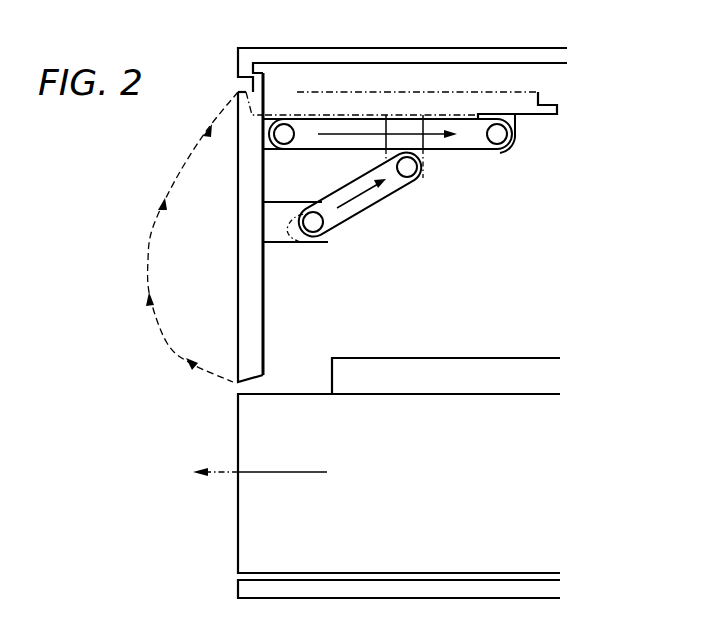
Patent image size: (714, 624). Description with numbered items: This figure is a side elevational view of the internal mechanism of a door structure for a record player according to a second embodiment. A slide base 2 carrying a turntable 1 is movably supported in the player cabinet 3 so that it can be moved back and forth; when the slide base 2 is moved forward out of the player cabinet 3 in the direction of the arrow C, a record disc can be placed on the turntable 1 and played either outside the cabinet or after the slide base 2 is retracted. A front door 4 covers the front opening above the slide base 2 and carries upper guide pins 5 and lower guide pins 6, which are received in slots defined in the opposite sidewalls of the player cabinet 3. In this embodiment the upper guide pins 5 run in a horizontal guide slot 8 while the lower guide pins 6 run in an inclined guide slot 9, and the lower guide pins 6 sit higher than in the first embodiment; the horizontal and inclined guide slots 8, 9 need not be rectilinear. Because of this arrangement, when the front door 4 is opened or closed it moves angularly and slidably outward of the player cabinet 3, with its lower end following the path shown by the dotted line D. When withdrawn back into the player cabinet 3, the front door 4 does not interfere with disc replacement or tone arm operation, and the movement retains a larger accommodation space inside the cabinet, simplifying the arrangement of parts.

The turntable 1 is at (395, 368).
The slide base 2 is at (445, 407).
The player cabinet 3 is at (338, 56).
The front door 4 is at (445, 92).
The upper guide pins 5 is at (274, 137).
The lower guide pins 6 is at (317, 226).
The horizontal guide slot 8 is at (367, 127).
The inclined guide slot 9 is at (368, 198).
The arrow C is at (275, 472).
The dotted line D is at (153, 225).